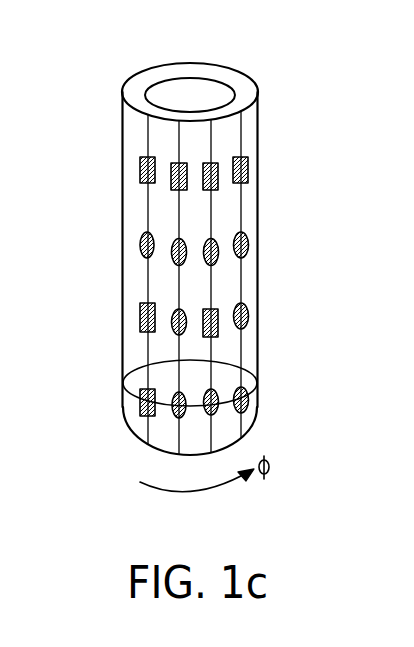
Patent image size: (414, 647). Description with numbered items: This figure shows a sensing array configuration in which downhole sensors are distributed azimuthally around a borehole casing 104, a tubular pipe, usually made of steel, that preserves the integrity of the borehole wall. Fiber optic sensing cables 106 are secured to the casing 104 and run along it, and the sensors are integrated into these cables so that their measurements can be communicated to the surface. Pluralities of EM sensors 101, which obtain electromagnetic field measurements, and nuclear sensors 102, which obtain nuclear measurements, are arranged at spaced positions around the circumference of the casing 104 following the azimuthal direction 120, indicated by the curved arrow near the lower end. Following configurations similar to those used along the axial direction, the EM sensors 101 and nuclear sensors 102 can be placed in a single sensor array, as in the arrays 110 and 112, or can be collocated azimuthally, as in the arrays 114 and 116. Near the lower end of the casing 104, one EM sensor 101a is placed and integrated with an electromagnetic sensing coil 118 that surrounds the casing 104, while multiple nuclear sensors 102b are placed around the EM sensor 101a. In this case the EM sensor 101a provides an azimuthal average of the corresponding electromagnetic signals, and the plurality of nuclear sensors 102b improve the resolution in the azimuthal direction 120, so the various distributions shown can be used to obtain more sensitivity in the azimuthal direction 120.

The casing 104 is at (145, 107).
The fiber optic sensing cables 106 is at (145, 137).
The EM sensors 101 is at (140, 178).
The nuclear sensors 102 is at (140, 251).
The array 110 is at (202, 182).
The array 112 is at (202, 256).
The array 114 is at (263, 315).
The array 116 is at (211, 432).
The electromagnetic sensing coil 118 is at (138, 399).
The EM sensor 101a is at (143, 418).
The nuclear sensors 102b is at (181, 417).
The azimuthal direction 120 is at (222, 488).